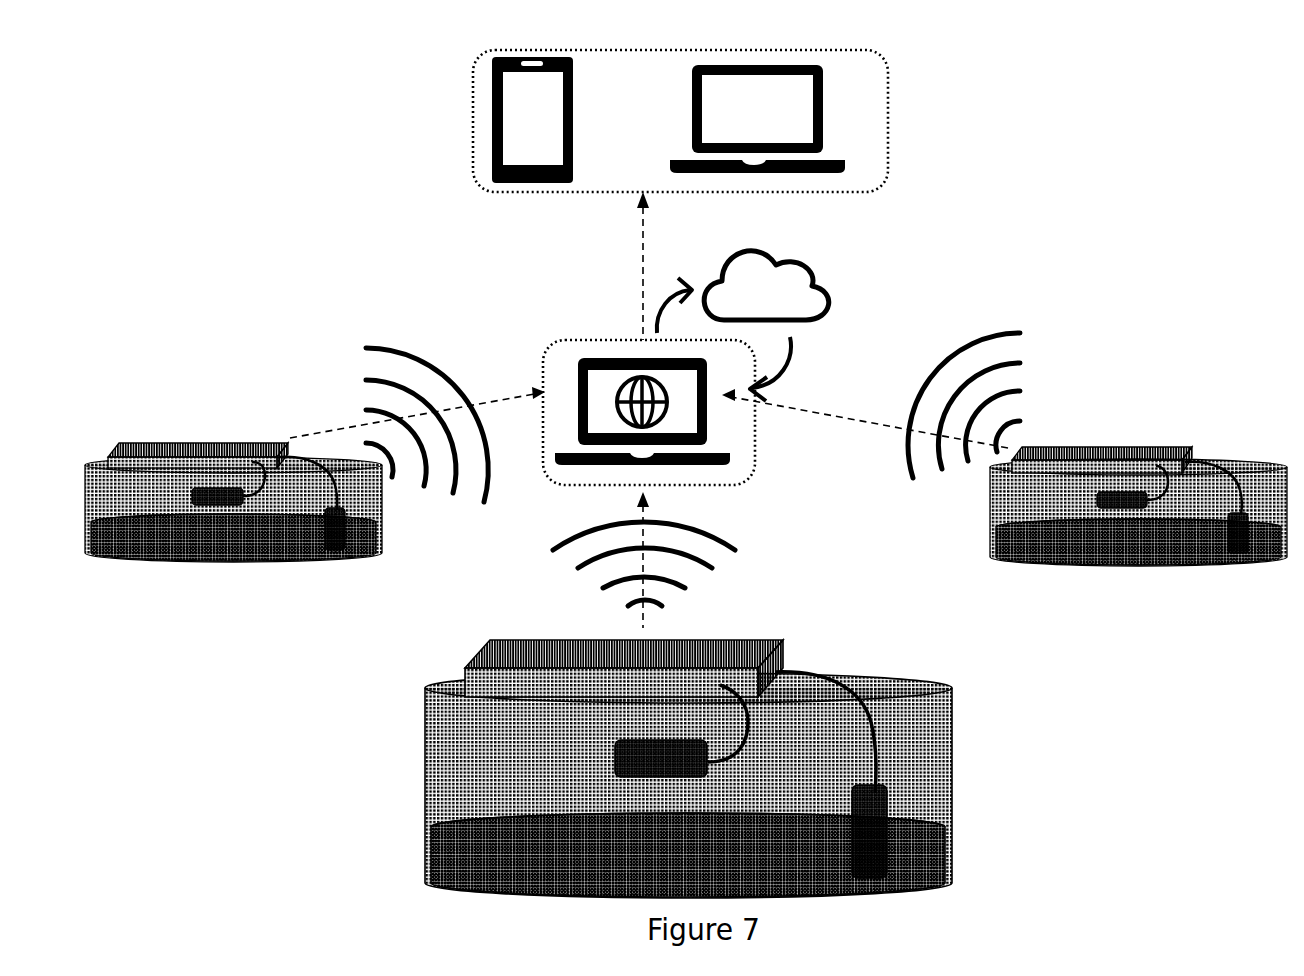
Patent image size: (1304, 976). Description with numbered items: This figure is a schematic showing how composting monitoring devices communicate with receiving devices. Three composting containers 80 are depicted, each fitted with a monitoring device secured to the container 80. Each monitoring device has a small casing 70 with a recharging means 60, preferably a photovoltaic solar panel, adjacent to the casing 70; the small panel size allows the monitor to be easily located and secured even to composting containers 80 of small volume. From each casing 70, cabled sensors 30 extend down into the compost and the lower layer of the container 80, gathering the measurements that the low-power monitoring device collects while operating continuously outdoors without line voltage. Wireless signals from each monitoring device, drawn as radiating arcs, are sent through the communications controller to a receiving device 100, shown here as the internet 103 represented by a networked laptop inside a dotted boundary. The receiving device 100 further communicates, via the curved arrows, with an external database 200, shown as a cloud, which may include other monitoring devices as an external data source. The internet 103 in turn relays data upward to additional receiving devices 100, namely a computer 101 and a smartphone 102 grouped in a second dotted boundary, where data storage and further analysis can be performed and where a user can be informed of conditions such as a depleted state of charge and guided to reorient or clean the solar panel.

The sensor 30 is at (751, 775).
The recharging means 60 is at (712, 643).
The casing 70 is at (780, 660).
The container 80 is at (933, 745).
The receiving device 100 is at (888, 140).
The computer 101 is at (795, 112).
The smartphone 102 is at (575, 110).
The internet 103 is at (577, 363).
The external database 200 is at (825, 290).